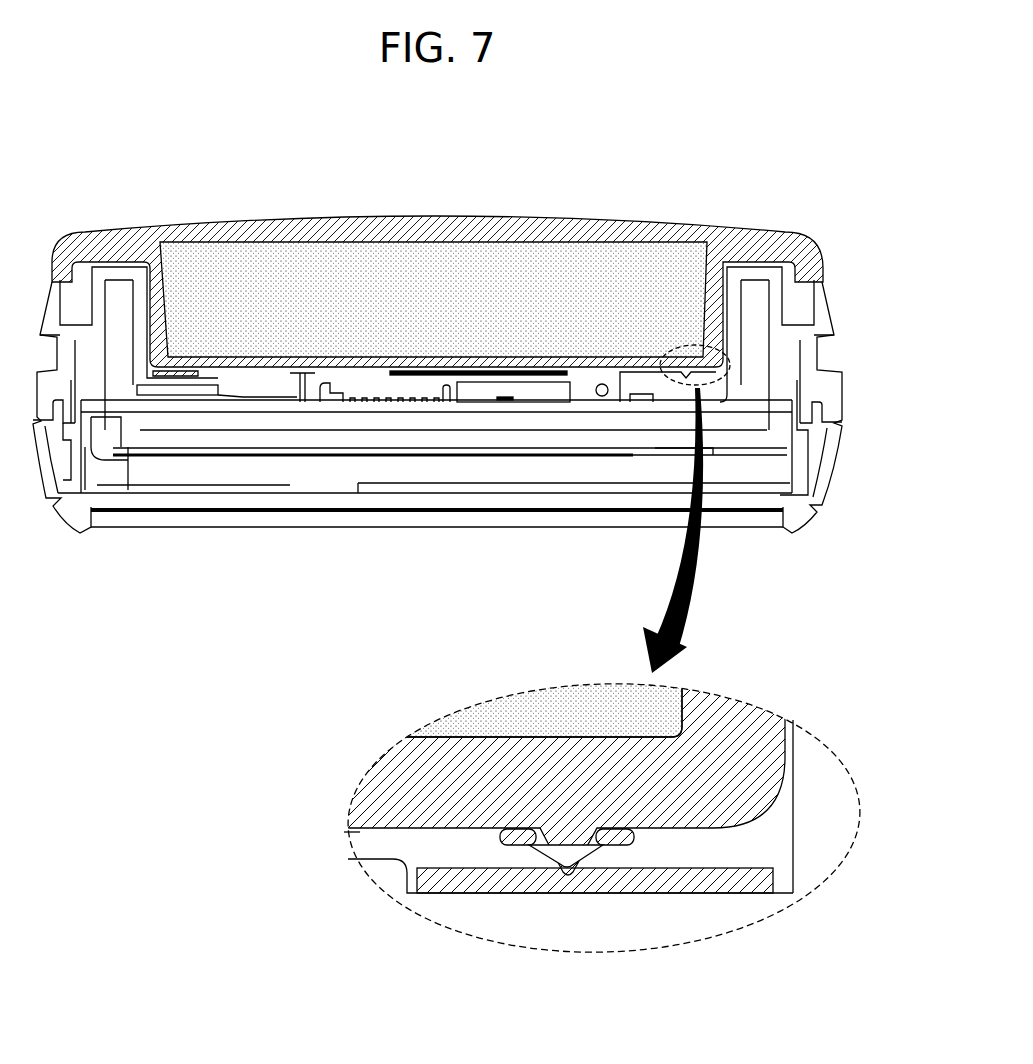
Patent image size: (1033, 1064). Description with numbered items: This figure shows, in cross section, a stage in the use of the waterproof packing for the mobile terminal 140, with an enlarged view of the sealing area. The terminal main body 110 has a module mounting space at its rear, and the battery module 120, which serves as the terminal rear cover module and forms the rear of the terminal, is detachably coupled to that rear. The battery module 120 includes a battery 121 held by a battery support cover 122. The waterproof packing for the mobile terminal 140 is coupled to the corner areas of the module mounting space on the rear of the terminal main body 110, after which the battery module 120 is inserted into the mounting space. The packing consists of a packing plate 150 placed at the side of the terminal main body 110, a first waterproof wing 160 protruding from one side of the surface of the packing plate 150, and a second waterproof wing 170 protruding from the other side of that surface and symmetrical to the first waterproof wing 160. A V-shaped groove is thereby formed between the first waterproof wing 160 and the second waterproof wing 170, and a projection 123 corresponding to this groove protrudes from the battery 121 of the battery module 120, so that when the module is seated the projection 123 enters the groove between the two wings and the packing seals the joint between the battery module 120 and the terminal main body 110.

The terminal main body 110 is at (193, 535).
The battery module 120 is at (437, 506).
The battery 121 is at (476, 262).
The battery support cover 122 is at (400, 226).
The projection 123 is at (567, 838).
The waterproof packing for the mobile terminal 140 is at (440, 895).
The packing plate 150 is at (753, 873).
The first waterproof wing 160 is at (622, 848).
The second waterproof wing 170 is at (517, 848).